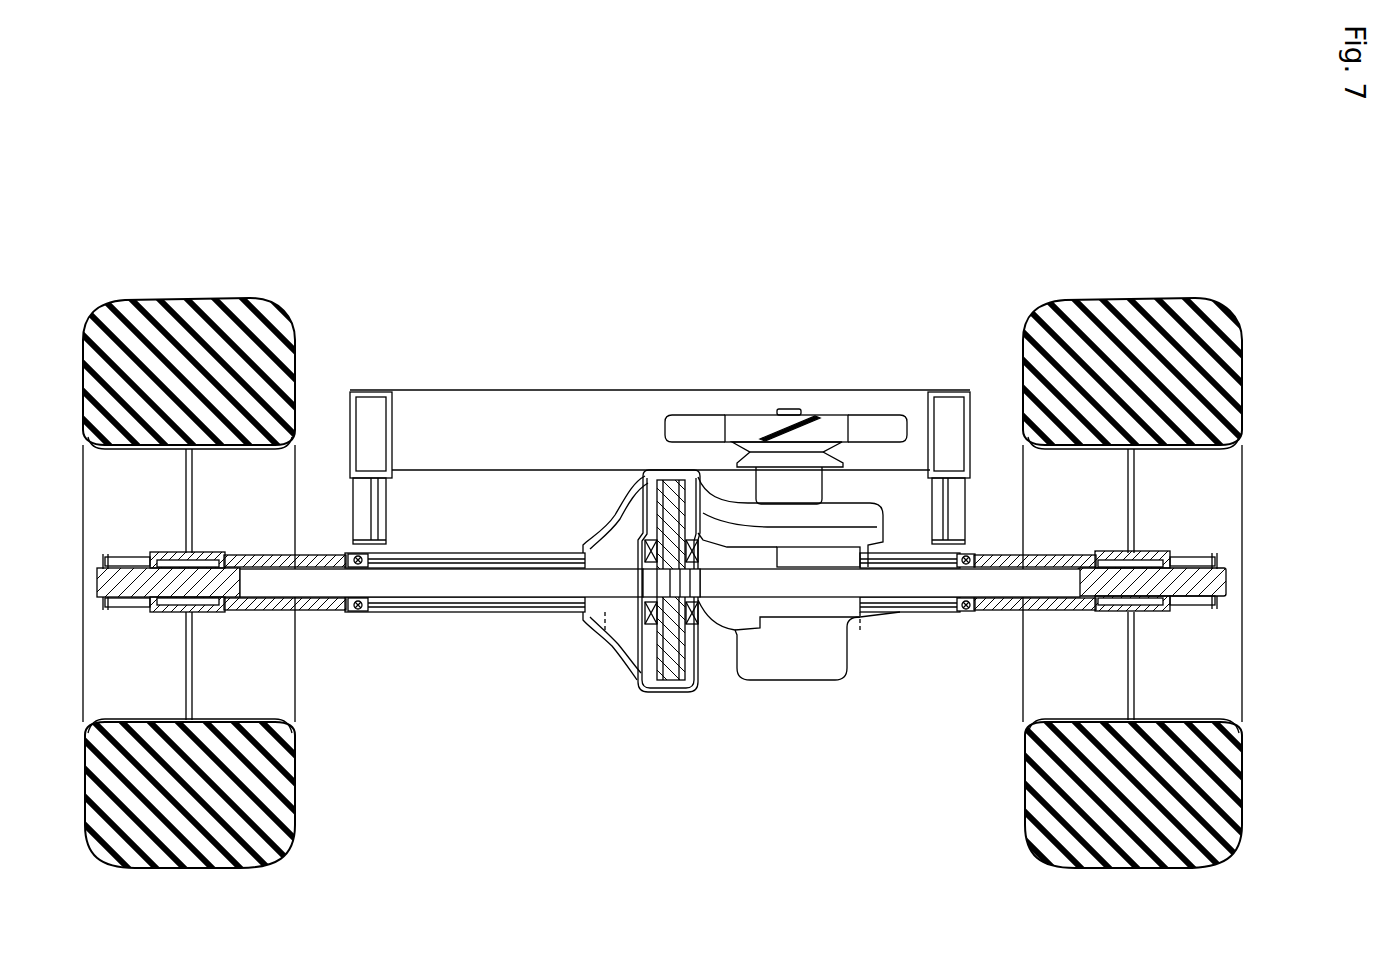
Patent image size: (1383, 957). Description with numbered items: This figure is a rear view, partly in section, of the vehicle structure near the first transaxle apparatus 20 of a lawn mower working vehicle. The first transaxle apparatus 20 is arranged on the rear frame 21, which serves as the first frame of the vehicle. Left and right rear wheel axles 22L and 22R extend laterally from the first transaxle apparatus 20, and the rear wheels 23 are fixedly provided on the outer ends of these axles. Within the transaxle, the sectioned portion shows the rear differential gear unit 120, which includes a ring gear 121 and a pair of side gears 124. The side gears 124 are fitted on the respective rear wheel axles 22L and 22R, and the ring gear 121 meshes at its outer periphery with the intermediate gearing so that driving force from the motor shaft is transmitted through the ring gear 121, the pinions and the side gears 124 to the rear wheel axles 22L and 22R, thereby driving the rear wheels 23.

The first transaxle apparatus 20 is at (857, 655).
The rear frame 21 is at (500, 390).
The left rear wheel axle 22L is at (326, 612).
The right rear wheel axle 22R is at (996, 612).
The rear wheel 23 is at (298, 806).
The rear differential gear unit 120 is at (673, 610).
The ring gear 121 is at (670, 688).
The side gear 124 is at (634, 626).